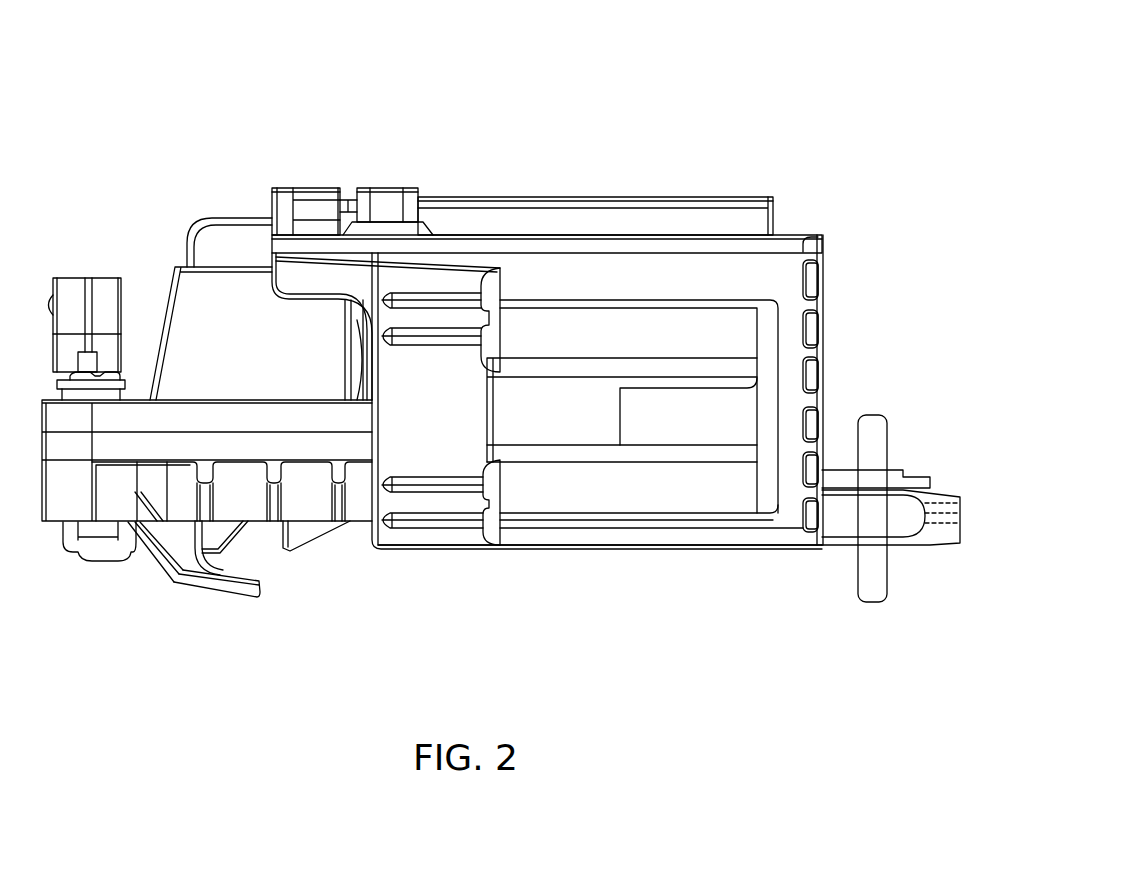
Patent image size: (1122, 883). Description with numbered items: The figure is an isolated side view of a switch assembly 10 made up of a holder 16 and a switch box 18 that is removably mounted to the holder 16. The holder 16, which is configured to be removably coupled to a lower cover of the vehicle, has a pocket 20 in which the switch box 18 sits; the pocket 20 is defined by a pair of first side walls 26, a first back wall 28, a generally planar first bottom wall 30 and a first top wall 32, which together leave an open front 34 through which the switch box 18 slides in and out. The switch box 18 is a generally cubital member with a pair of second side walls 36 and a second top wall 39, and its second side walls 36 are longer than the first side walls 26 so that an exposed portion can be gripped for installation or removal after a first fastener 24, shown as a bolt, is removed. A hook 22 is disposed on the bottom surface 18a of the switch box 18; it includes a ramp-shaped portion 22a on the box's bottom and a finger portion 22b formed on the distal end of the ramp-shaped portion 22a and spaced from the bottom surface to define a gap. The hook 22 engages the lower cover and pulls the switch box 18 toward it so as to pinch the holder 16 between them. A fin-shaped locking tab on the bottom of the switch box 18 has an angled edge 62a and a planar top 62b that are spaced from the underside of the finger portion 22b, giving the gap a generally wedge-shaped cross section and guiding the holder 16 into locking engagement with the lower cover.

The switch assembly 10 is at (686, 66).
The holder 16 is at (781, 148).
The switch box 18 is at (200, 177).
The bottom surface 18a is at (45, 526).
The pocket 20 is at (357, 313).
The hook 22 is at (200, 608).
The ramp-shaped portion 22a is at (150, 560).
The finger portion 22b is at (241, 598).
The first fastener 24 is at (397, 186).
The first side walls 26 is at (762, 272).
The first back wall 28 is at (823, 303).
The first bottom wall 30 is at (682, 552).
The first top wall 32 is at (612, 232).
The open front 34 is at (357, 388).
The second side walls 36 is at (200, 345).
The second top wall 39 is at (185, 262).
The angled edge 62a is at (248, 547).
The planar top 62b is at (253, 556).